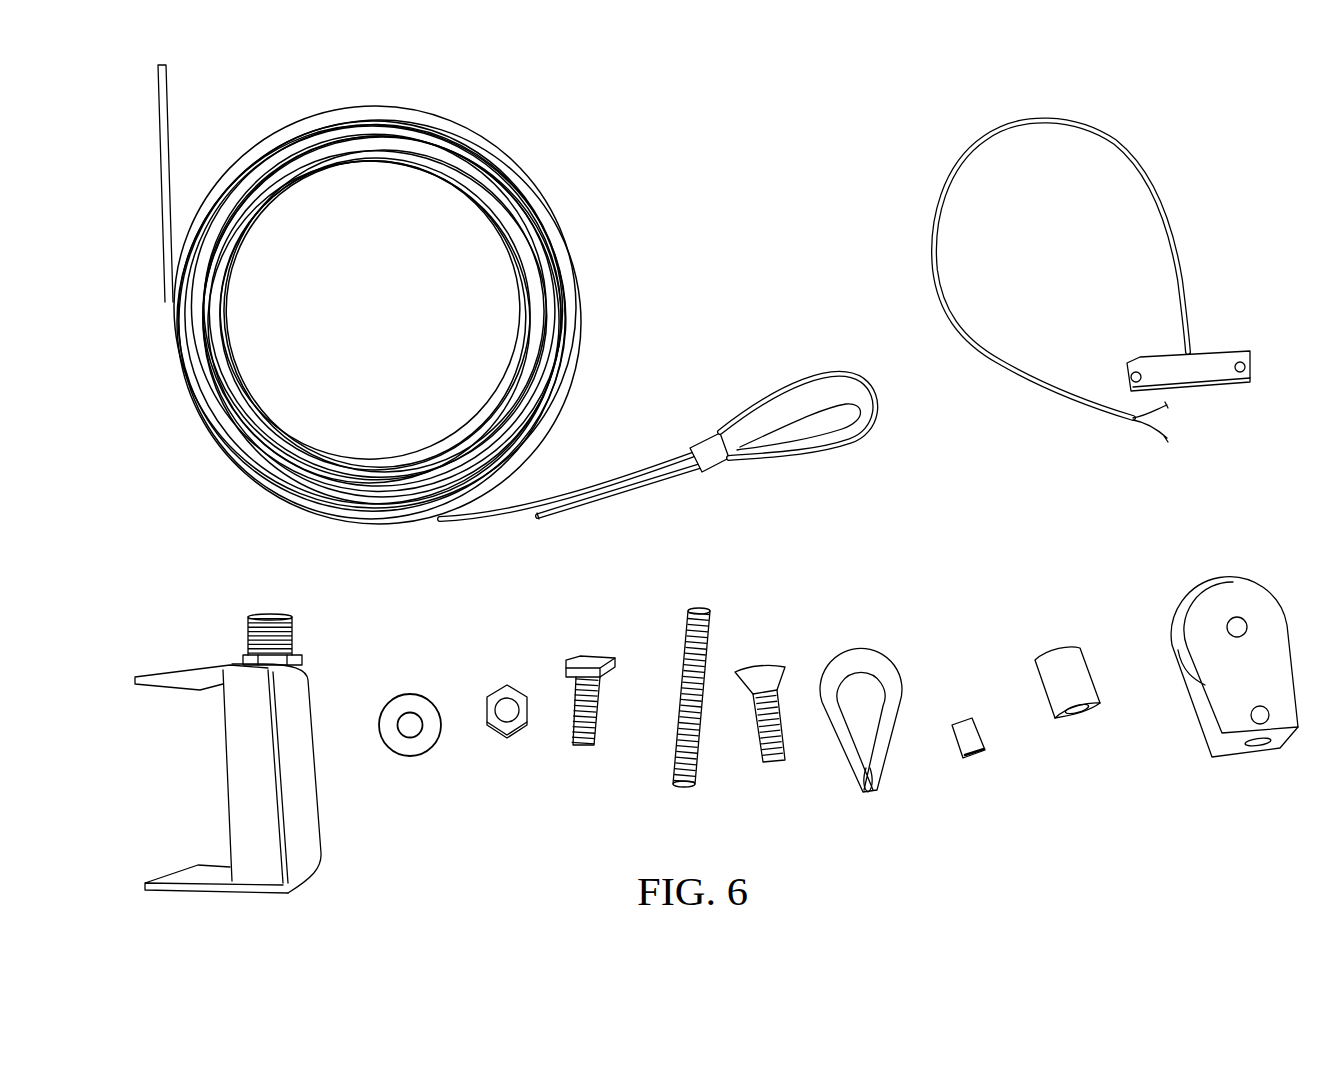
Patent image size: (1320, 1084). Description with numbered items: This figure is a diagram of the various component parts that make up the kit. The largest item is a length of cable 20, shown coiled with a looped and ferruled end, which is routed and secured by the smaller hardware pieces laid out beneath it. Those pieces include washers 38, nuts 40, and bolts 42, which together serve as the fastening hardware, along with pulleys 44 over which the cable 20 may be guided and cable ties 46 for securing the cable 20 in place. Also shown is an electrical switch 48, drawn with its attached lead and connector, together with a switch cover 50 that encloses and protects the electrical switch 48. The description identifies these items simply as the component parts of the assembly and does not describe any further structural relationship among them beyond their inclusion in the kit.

The cable 20 is at (477, 139).
The washers 38 is at (423, 740).
The nuts 40 is at (523, 728).
The bolts 42 is at (760, 745).
The pulleys 44 is at (1235, 713).
The cable ties 46 is at (1068, 727).
The electrical switch 48 is at (1210, 365).
The switch cover 50 is at (247, 801).